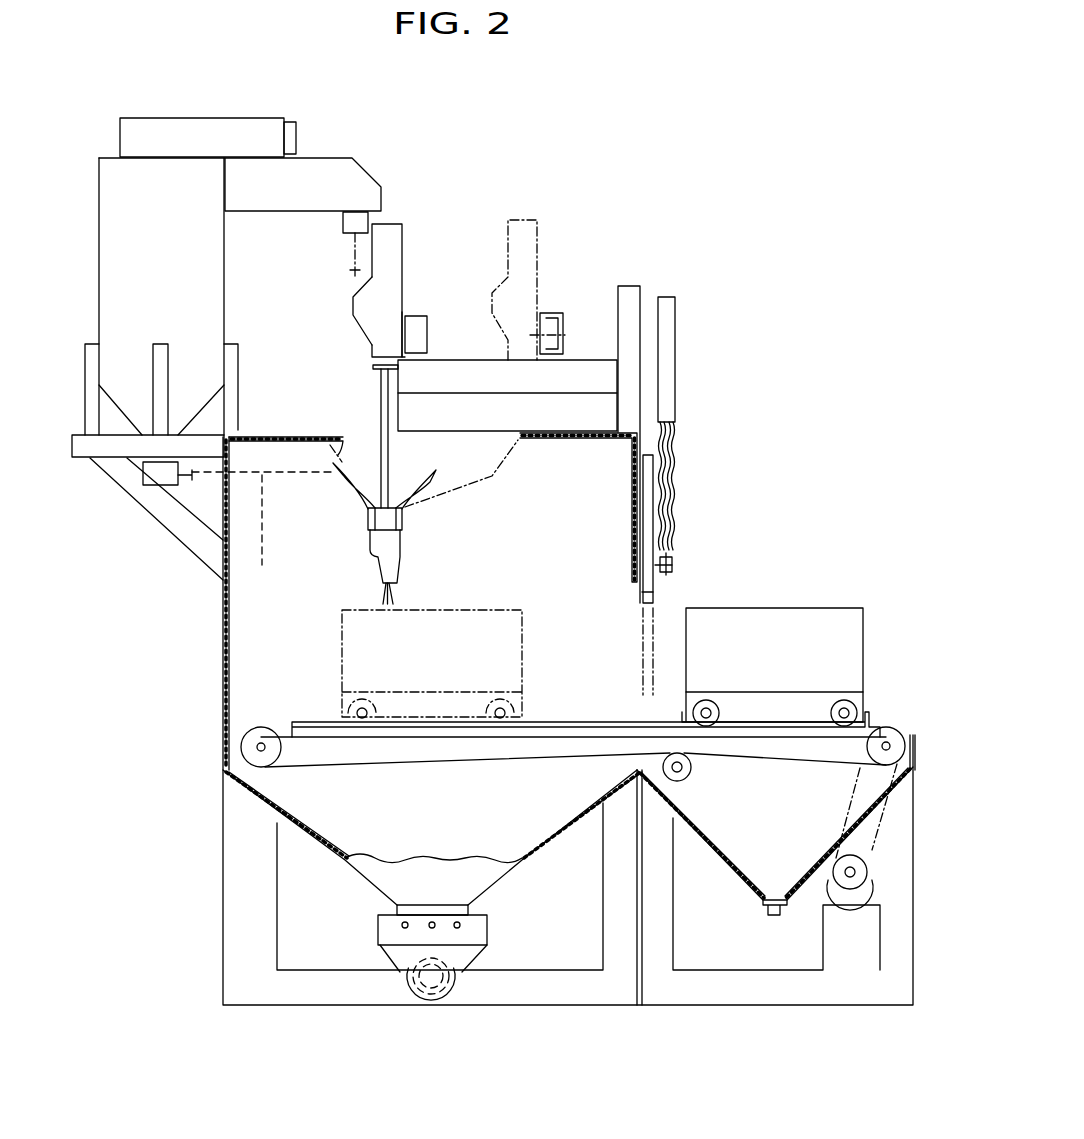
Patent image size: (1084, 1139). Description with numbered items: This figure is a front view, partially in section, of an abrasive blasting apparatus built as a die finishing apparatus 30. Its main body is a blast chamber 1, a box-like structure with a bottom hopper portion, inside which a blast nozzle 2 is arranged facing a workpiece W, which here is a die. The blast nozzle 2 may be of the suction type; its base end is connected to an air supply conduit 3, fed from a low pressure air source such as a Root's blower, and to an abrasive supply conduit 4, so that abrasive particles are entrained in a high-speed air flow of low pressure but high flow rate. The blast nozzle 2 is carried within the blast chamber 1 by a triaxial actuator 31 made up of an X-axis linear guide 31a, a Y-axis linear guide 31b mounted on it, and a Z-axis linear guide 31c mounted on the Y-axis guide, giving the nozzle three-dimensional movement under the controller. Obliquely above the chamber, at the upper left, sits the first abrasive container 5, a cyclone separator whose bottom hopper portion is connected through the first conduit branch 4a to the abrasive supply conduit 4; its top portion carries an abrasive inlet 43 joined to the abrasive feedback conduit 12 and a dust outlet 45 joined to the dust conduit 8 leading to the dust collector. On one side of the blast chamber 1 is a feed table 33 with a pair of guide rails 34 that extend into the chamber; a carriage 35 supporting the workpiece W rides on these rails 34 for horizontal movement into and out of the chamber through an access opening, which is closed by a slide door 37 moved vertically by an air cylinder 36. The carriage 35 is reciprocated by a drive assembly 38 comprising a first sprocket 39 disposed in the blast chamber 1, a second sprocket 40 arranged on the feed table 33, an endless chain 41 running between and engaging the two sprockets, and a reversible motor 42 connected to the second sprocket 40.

The blast chamber 1 is at (222, 625).
The blast nozzle 2 is at (400, 545).
The air supply conduit 3 is at (418, 500).
The abrasive supply conduit 4 is at (357, 492).
The first conduit branch 4a is at (265, 537).
The first abrasive container 5 is at (96, 230).
The dust conduit 8 is at (297, 135).
The abrasive feedback conduit 12 is at (350, 250).
The die finishing apparatus 30 is at (598, 235).
The triaxial actuator 31 is at (423, 298).
The X-axis linear guide 31a is at (582, 355).
The Y-axis linear guide 31b is at (427, 332).
The Z-axis linear guide 31c is at (353, 315).
The feed table 33 is at (792, 735).
The guide rails 34 is at (757, 717).
The carriage 35 is at (737, 610).
The air cylinder 36 is at (680, 350).
The slide door 37 is at (650, 513).
The drive assembly 38 is at (845, 780).
The first sprocket 39 is at (290, 763).
The second sprocket 40 is at (886, 727).
The endless chain 41 is at (468, 763).
The reversible motor 42 is at (878, 887).
The abrasive inlet 43 is at (358, 185).
The dust outlet 45 is at (242, 125).
The workpiece W is at (812, 607).